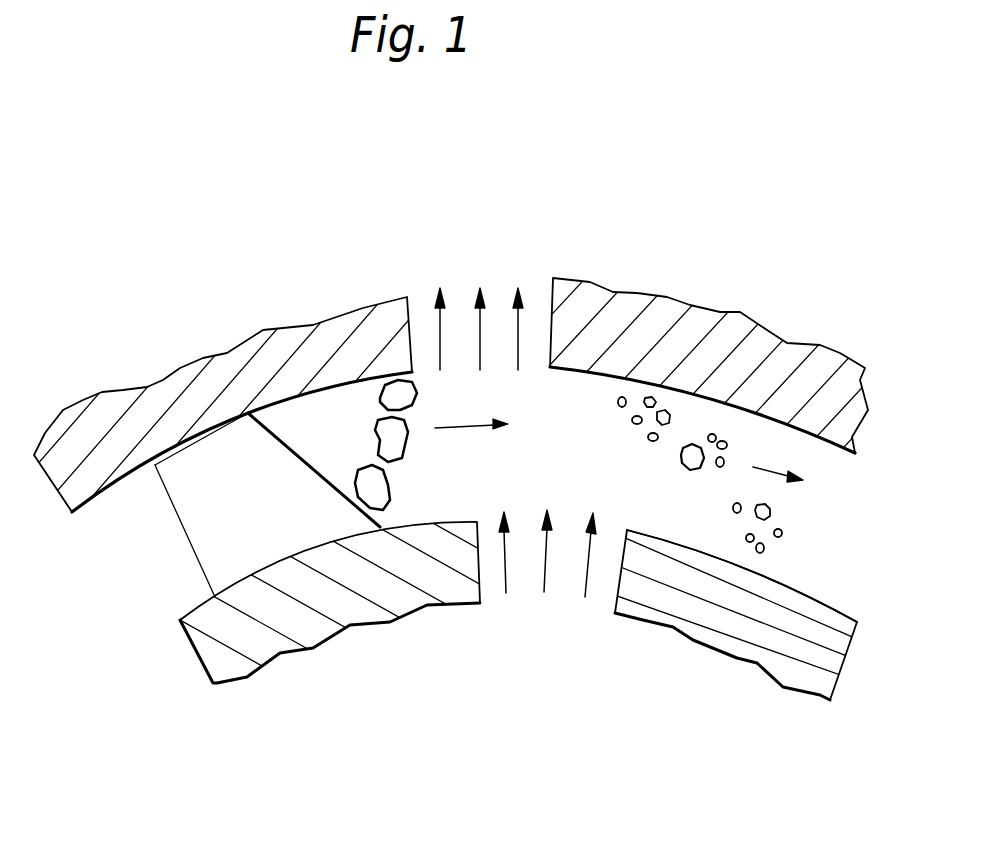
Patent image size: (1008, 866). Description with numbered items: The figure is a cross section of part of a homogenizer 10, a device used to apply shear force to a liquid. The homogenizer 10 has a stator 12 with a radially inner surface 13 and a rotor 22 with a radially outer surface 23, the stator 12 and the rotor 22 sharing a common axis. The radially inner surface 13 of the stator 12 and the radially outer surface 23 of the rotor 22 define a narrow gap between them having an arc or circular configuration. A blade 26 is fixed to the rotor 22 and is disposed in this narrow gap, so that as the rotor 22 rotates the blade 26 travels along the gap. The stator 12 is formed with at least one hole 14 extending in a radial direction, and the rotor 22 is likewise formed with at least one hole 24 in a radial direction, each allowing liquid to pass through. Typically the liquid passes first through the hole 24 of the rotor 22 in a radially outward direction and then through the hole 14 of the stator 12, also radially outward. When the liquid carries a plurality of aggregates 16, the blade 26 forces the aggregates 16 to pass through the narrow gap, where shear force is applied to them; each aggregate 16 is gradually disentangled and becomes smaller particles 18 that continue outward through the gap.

The homogenizer 10 is at (245, 732).
The stator 12 is at (787, 352).
The radially inner surface 13 is at (833, 450).
The hole 14 is at (413, 327).
The aggregates 16 is at (388, 442).
The smaller particles 18 is at (690, 458).
The rotor 22 is at (843, 673).
The radially outer surface 23 is at (830, 600).
The hole 24 is at (617, 585).
The blade 26 is at (210, 532).